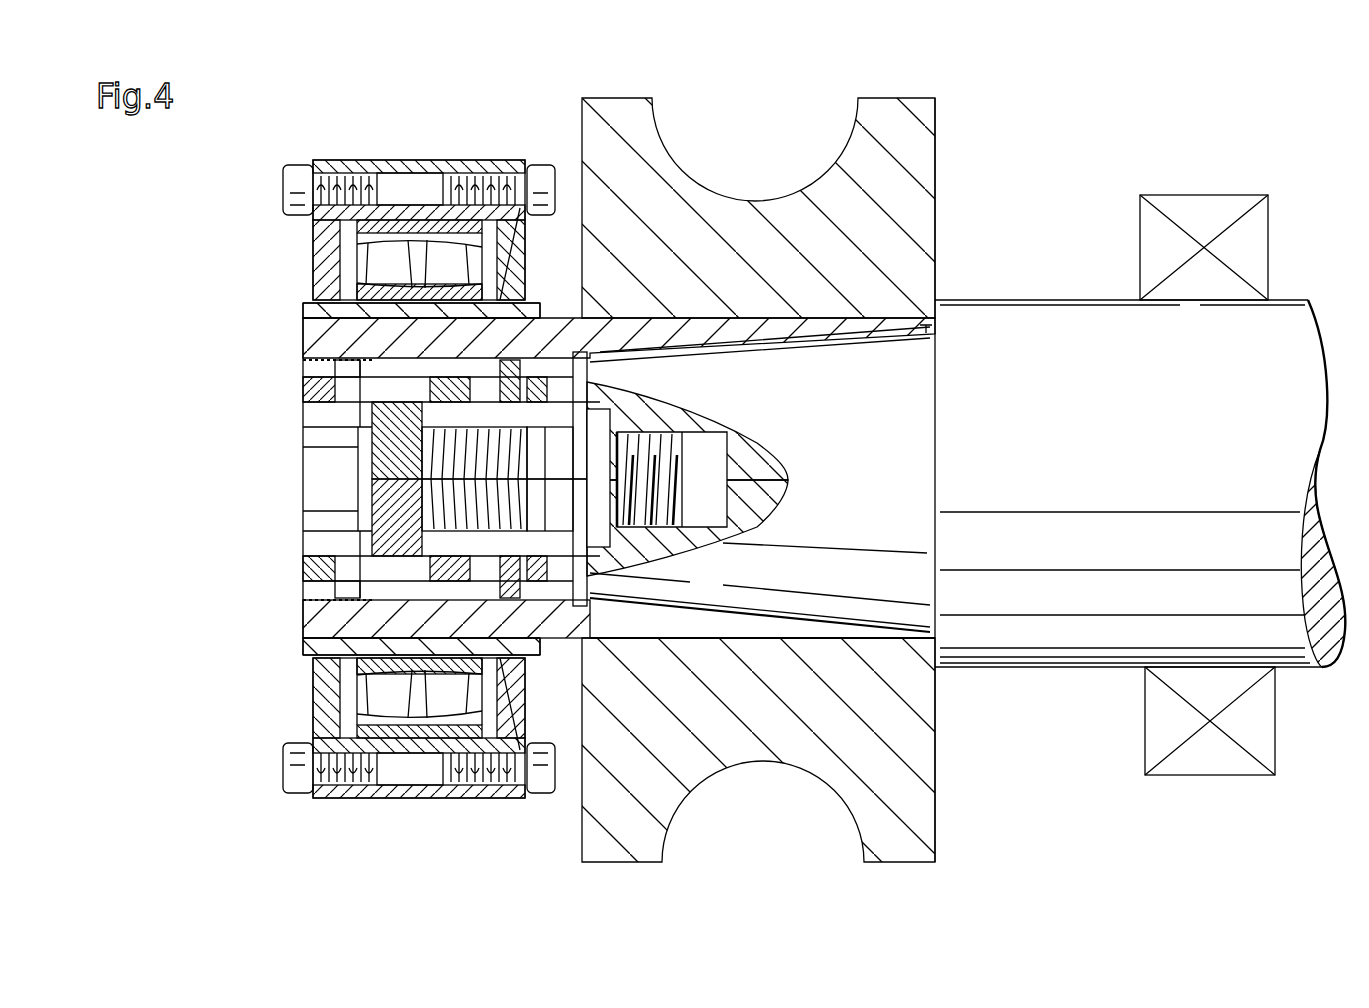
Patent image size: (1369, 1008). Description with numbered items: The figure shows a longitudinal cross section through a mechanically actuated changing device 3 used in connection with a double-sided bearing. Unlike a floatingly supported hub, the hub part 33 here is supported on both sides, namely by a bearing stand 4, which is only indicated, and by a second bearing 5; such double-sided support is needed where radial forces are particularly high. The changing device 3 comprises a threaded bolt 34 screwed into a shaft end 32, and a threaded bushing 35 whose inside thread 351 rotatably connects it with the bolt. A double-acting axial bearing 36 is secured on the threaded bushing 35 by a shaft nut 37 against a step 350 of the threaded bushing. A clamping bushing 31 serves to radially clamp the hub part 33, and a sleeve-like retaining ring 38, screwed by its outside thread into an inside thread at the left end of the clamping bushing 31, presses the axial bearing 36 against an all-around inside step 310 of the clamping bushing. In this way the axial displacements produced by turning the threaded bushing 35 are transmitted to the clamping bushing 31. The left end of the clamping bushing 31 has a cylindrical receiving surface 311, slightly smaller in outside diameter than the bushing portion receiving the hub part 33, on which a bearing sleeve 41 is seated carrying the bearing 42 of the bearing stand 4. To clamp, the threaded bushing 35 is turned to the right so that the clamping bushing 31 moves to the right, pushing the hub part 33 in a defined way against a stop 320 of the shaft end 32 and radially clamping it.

The changing device 3 is at (296, 340).
The bearing stand 4 is at (310, 152).
The second bearing 5 is at (1202, 198).
The clamping bushing 31 is at (322, 622).
The shaft end 32 is at (942, 370).
The hub part 33 is at (902, 124).
The threaded bolt 34 is at (557, 516).
The threaded bushing 35 is at (330, 540).
The double-acting axial bearing 36 is at (497, 372).
The shaft nut 37 is at (330, 396).
The retaining ring 38 is at (330, 370).
The bearing sleeve 41 is at (310, 300).
The bearing 42 is at (430, 166).
The inside step 310 is at (557, 348).
The receiving surface 311 is at (333, 650).
The stop 320 is at (937, 330).
The step 350 is at (588, 640).
The inside thread 351 is at (493, 553).